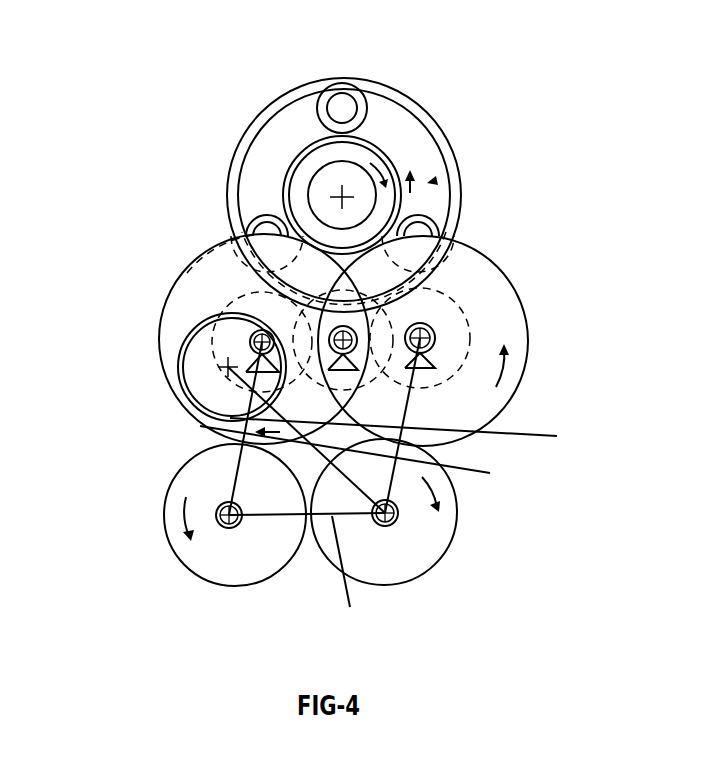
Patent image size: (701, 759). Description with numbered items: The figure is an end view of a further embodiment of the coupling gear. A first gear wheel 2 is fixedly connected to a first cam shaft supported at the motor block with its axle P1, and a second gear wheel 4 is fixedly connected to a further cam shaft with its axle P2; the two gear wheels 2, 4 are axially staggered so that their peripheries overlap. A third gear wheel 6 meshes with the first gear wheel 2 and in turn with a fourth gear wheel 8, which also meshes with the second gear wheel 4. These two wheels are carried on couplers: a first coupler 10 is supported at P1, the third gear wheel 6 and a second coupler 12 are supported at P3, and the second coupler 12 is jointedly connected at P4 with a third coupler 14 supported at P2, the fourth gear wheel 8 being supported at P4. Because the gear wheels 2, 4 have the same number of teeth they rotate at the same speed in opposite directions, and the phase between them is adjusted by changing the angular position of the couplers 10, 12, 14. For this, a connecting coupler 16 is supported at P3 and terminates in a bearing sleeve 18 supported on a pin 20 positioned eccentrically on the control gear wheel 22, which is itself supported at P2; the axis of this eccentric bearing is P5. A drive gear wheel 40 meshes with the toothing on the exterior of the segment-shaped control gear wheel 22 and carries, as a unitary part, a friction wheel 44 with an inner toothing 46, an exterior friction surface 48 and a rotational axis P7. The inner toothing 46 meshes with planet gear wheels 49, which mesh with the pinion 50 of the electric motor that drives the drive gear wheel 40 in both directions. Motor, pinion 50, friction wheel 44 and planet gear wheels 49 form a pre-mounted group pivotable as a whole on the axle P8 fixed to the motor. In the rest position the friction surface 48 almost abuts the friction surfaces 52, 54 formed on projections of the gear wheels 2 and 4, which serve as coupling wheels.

The first gear wheel 2 is at (470, 275).
The second gear wheel 4 is at (200, 426).
The third gear wheel 6 is at (437, 525).
The fourth gear wheel 8 is at (185, 557).
The first coupler 10 is at (407, 437).
The second coupler 12 is at (347, 581).
The third coupler 14 is at (233, 477).
The connecting coupler 16 is at (361, 457).
The bearing sleeve 18 is at (172, 373).
The pin 20 is at (200, 361).
The control gear wheel 22 is at (193, 297).
The drive gear wheel 40 is at (393, 175).
The friction wheel 44 is at (430, 182).
The inner toothing 46 is at (248, 153).
The exterior friction surface 48 is at (267, 107).
The planet gear wheels 49 is at (345, 105).
The pinion 50 is at (380, 150).
The friction surface 52 is at (470, 349).
The friction surface 54 is at (243, 298).
The axle of the first cam shaft P1 is at (436, 336).
The axle of the second cam shaft P2 is at (250, 341).
The support point of the third gear wheel P3 is at (393, 520).
The joint of the second and third couplers P4 is at (232, 523).
The axis of the eccentric bearing P5 is at (228, 367).
The rotational axis of the friction wheel P7 is at (346, 198).
The pivot axle of the structural group P8 is at (356, 336).